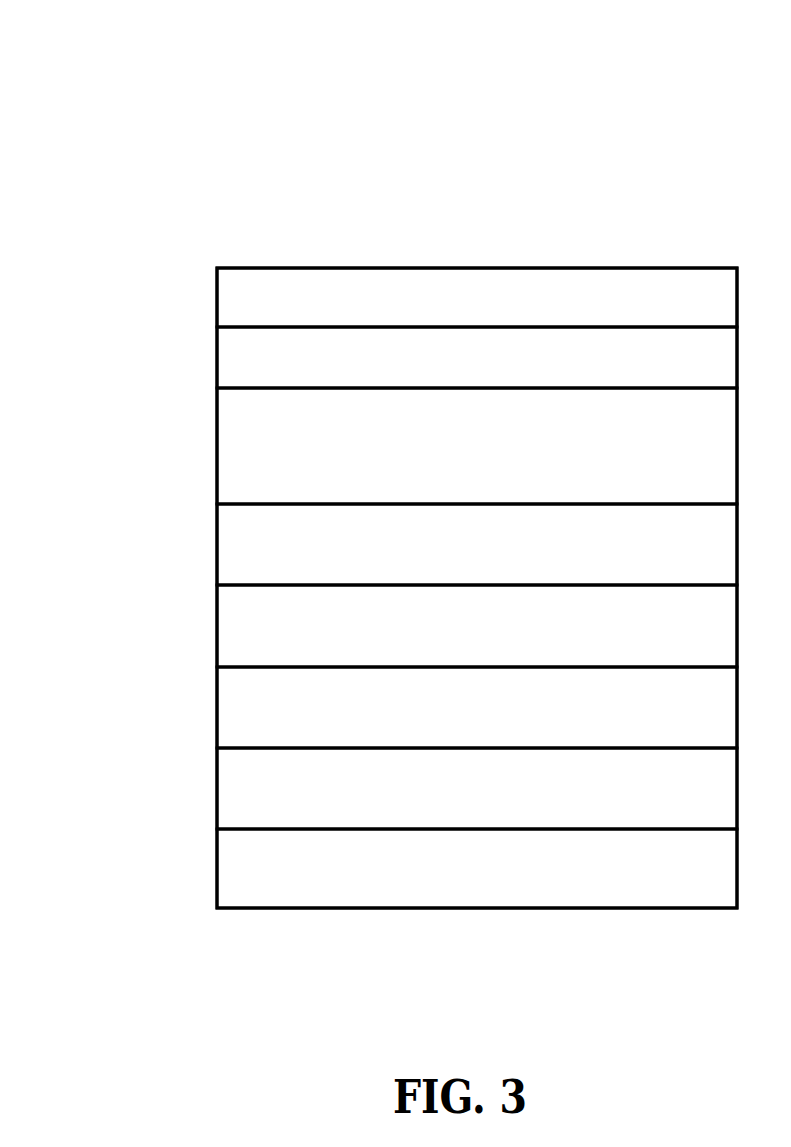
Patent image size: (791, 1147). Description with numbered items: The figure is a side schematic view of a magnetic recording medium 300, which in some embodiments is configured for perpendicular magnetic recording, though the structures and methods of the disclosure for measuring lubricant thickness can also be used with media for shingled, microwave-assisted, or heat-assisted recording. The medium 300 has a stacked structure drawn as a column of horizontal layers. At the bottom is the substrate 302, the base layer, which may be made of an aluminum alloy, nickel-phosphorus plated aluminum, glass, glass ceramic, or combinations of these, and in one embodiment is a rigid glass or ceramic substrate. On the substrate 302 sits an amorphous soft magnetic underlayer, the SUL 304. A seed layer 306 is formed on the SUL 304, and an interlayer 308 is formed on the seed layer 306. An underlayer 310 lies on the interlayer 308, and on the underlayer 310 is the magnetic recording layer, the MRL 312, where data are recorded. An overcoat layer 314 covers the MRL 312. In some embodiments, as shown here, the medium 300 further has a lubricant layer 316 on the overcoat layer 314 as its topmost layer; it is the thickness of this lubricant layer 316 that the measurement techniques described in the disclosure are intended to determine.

The magnetic recording medium 300 is at (396, 458).
The substrate 302 is at (217, 860).
The amorphous soft magnetic underlayer (SUL) 304 is at (217, 788).
The seed layer 306 is at (217, 708).
The interlayer 308 is at (217, 629).
The underlayer 310 is at (217, 547).
The magnetic recording layer (MRL) 312 is at (217, 463).
The overcoat layer 314 is at (217, 361).
The lubricant layer 316 is at (217, 303).